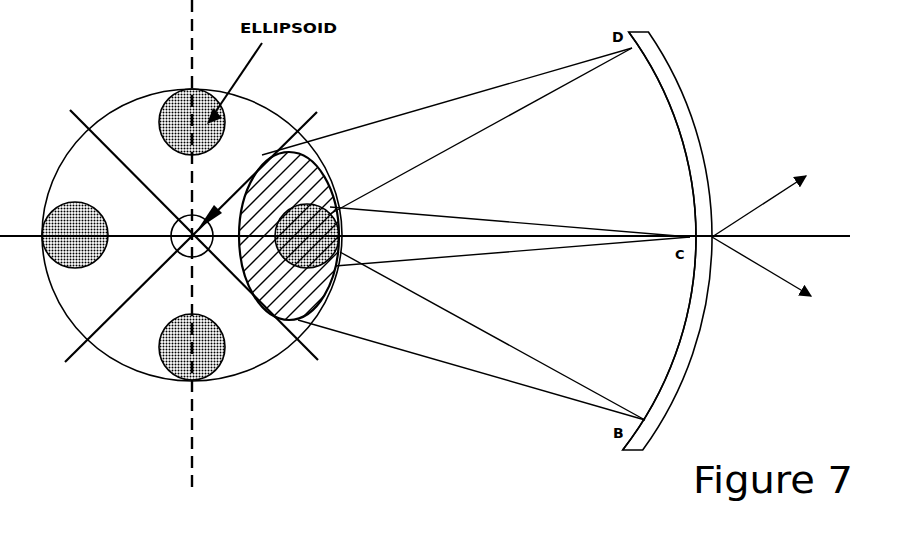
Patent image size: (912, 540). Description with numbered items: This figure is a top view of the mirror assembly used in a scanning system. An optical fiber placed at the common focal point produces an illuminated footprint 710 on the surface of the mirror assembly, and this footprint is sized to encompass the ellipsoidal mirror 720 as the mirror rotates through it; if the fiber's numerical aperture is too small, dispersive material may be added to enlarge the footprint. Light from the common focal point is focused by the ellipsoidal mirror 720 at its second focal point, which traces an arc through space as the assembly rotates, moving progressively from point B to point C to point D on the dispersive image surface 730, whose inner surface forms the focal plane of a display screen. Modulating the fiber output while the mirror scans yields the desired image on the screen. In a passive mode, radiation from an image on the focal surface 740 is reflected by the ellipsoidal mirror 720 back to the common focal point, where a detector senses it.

The illuminated footprint 710 is at (287, 293).
The ellipsoidal mirror 720 is at (337, 188).
The dispersive image surface 730 is at (700, 92).
The focal surface 740 is at (666, 148).